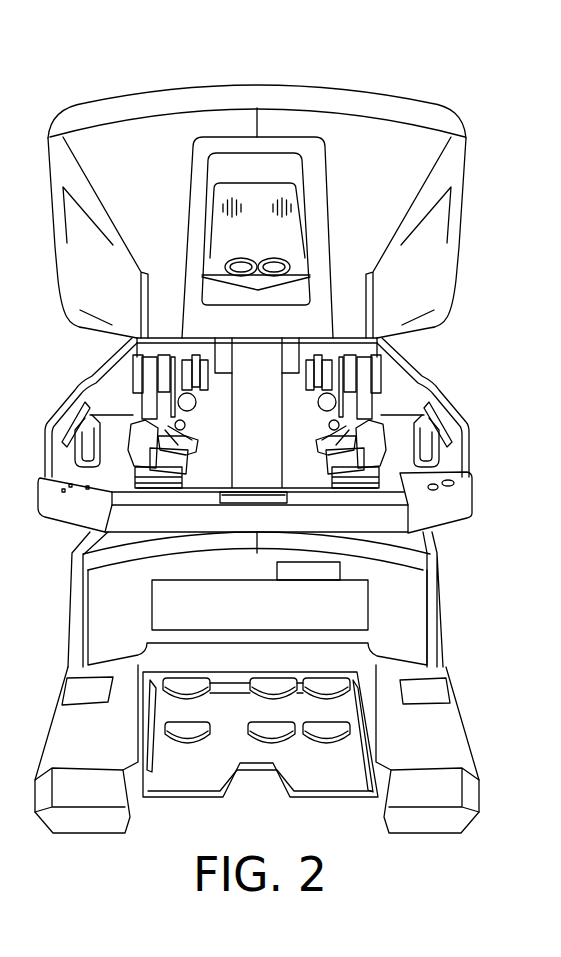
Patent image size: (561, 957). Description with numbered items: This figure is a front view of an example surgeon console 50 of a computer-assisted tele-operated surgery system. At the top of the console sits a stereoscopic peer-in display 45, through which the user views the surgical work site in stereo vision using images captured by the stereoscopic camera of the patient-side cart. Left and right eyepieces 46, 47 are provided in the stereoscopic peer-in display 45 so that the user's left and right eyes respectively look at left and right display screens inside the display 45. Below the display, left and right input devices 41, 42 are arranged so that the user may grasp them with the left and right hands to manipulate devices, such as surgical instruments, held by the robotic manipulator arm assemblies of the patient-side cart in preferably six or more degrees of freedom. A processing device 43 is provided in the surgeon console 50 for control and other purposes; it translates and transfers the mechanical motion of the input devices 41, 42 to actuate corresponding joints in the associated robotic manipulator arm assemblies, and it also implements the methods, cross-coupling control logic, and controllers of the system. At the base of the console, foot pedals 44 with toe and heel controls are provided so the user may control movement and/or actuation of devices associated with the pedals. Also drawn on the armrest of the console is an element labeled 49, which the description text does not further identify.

The surgeon console 50 is at (497, 102).
The stereoscopic peer-in display 45 is at (213, 252).
The left eyepiece 46 is at (243, 261).
The right eyepiece 47 is at (268, 261).
The left input device 41 is at (198, 452).
The right input device 42 is at (323, 447).
The control buttons 49 is at (458, 487).
The processing device 43 is at (368, 608).
The foot pedals 44 is at (307, 702).